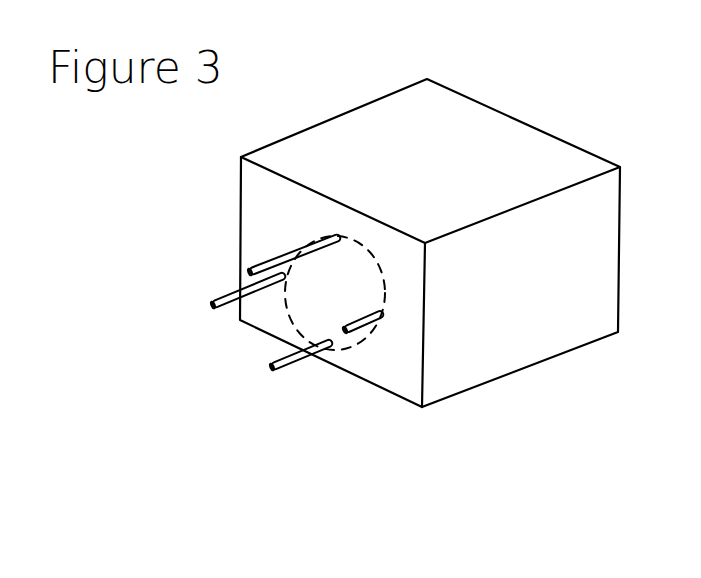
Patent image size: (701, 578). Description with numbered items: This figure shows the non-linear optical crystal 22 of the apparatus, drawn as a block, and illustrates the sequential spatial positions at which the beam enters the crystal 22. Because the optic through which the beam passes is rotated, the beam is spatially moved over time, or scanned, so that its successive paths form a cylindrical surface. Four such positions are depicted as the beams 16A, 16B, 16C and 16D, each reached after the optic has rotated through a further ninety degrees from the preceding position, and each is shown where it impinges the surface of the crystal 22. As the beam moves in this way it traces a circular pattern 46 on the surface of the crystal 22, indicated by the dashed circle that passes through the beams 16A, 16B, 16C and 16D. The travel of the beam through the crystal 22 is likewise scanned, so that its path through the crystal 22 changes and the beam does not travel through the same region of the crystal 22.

The non-linear optical crystal 22 is at (508, 142).
The circular pattern 46 is at (395, 287).
The beam 16A is at (287, 245).
The beam 16B is at (367, 333).
The beam 16C is at (290, 368).
The beam 16D is at (223, 283).